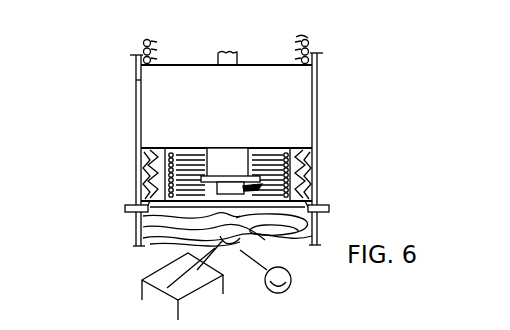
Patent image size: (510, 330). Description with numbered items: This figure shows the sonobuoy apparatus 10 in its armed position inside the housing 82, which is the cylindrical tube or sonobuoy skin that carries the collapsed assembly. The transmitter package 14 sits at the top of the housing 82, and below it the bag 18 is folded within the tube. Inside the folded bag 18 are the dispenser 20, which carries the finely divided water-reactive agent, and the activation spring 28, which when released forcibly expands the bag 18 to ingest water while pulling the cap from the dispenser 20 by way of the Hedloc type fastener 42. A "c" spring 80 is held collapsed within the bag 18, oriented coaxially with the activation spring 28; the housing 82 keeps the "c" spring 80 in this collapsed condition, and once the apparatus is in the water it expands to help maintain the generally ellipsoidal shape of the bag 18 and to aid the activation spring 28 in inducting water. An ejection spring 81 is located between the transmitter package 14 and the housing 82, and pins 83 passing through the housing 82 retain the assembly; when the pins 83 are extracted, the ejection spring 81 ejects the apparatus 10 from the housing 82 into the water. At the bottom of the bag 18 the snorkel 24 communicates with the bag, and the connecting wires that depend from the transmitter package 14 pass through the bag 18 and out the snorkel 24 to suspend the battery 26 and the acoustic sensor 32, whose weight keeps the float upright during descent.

The sonobuoy float 10 is at (68, 135).
The transmitter package 14 is at (300, 80).
The bag 18 is at (303, 152).
The dispenser 20 is at (221, 157).
The snorkel 24 is at (180, 236).
The battery 26 is at (197, 298).
The activation spring 28 is at (277, 155).
The acoustic sensor 32 is at (292, 282).
The Hedloc type fastener 42 is at (229, 186).
The "c" spring 80 is at (313, 175).
The ejection spring 81 is at (146, 36).
The housing 82 is at (136, 100).
The pins 83 is at (124, 208).